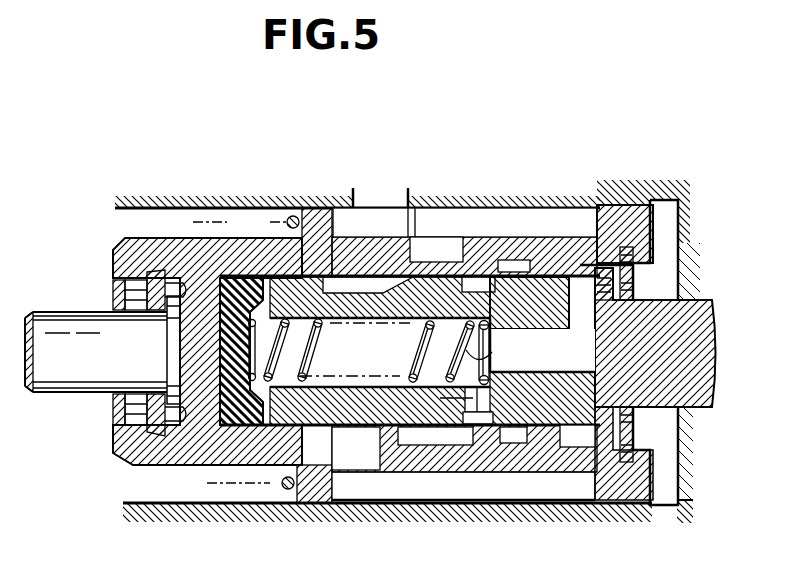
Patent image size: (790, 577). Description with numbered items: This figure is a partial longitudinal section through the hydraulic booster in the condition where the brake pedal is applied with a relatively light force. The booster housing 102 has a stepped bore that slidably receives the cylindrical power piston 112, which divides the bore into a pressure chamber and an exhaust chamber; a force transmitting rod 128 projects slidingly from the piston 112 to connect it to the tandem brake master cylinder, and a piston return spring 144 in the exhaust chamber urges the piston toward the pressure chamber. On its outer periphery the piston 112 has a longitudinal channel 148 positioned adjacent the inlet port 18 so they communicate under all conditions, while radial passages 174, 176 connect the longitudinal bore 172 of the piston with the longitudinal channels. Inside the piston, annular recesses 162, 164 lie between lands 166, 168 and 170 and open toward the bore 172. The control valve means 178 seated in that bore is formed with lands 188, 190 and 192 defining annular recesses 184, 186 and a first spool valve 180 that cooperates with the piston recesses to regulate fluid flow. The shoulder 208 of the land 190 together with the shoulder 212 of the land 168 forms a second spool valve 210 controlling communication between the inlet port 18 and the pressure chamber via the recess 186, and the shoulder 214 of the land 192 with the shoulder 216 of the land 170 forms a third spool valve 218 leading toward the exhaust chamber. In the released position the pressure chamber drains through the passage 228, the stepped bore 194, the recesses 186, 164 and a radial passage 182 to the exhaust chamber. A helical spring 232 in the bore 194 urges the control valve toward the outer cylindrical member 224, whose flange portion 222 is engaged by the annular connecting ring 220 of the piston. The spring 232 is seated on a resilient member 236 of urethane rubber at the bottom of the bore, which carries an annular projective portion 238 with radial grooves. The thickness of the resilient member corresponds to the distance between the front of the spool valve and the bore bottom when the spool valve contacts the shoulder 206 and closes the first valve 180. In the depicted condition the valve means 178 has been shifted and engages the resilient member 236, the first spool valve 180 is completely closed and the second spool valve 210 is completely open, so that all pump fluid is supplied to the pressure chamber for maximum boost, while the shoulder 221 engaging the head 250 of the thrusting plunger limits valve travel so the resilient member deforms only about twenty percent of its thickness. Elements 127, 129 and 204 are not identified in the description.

The inlet port 18 is at (378, 200).
The booster housing 102 is at (181, 196).
The power piston 112 is at (115, 240).
The upper shaft seal 127 is at (136, 298).
The force transmitting rod 128 is at (62, 382).
The lower shaft seal 129 is at (136, 411).
The piston return spring 144 is at (286, 488).
The longitudinal channel 148 is at (458, 235).
The annular recess 162 is at (448, 270).
The annular recess 164 is at (547, 218).
The land 166 is at (366, 296).
The land 168 is at (520, 260).
The land 170 is at (563, 250).
The longitudinal bore 172 is at (312, 270).
The radial passage 174 is at (470, 328).
The radial passage 176 is at (410, 414).
The control valve means 178 is at (287, 292).
The first spool valve 180 is at (412, 526).
The radial passage 182 is at (391, 387).
The annular recess 184 is at (372, 283).
The annular recess 186 is at (491, 330).
The land 188 is at (465, 222).
The land 190 is at (424, 282).
The land 192 is at (568, 264).
The stepped bore 194 is at (280, 380).
The port 204 is at (397, 420).
The shoulder 206 is at (396, 262).
The shoulder 208 is at (405, 430).
The second spool valve 210 is at (466, 429).
The shoulder 212 is at (480, 428).
The shoulder 214 is at (497, 420).
The shoulder 216 is at (507, 428).
The third spool valve 218 is at (532, 433).
The annular connecting ring 220 is at (676, 262).
The shoulder 221 is at (590, 277).
The flange portion 222 is at (658, 305).
The outer cylindrical member 224 is at (687, 463).
The passage 228 is at (583, 302).
The helical spring 232 is at (250, 352).
The resilient member 236 is at (218, 327).
The annular projective portion 238 is at (246, 220).
The head 250 is at (633, 440).